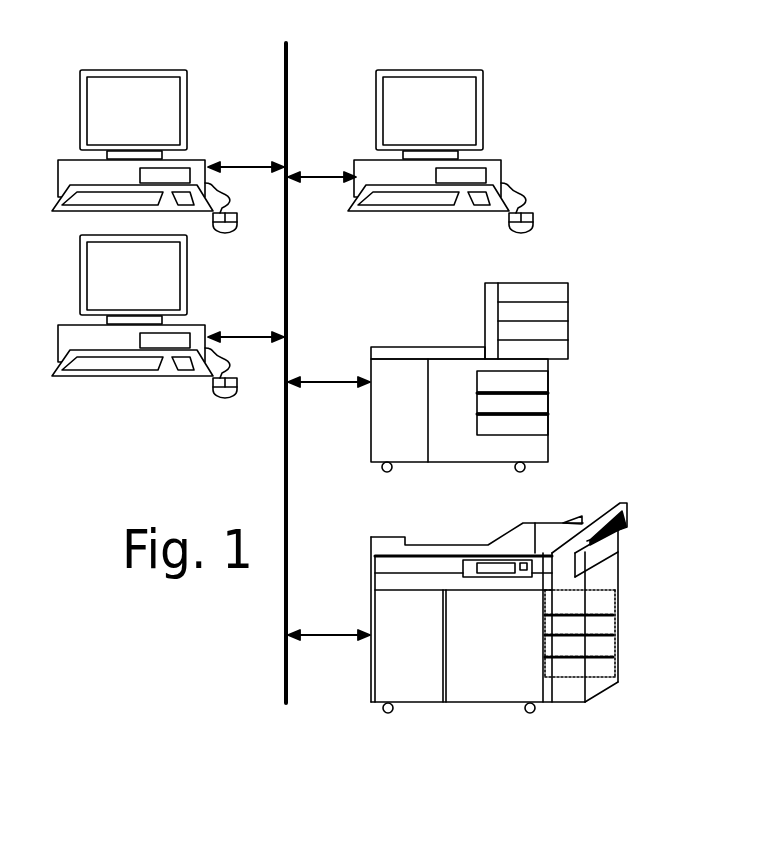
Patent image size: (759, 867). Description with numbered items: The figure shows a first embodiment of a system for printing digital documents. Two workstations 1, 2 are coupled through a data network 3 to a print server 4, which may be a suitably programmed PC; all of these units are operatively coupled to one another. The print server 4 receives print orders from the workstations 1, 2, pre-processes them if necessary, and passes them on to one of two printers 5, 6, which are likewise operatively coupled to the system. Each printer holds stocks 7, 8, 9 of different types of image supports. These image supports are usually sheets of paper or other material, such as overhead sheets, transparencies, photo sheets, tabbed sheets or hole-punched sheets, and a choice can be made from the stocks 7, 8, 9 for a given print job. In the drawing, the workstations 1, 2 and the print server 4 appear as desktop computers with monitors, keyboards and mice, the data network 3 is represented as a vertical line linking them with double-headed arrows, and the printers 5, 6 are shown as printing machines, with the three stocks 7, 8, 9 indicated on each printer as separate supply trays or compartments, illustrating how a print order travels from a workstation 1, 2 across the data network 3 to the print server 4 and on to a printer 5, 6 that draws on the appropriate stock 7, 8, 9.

The workstation 1 is at (187, 112).
The workstation 2 is at (187, 302).
The data network 3 is at (287, 93).
The print server 4 is at (483, 143).
The printer 5 is at (460, 347).
The printer 6 is at (412, 702).
The stock of image supports 7 is at (548, 383).
The stock of image supports 8 is at (548, 407).
The stock of image supports 9 is at (548, 431).